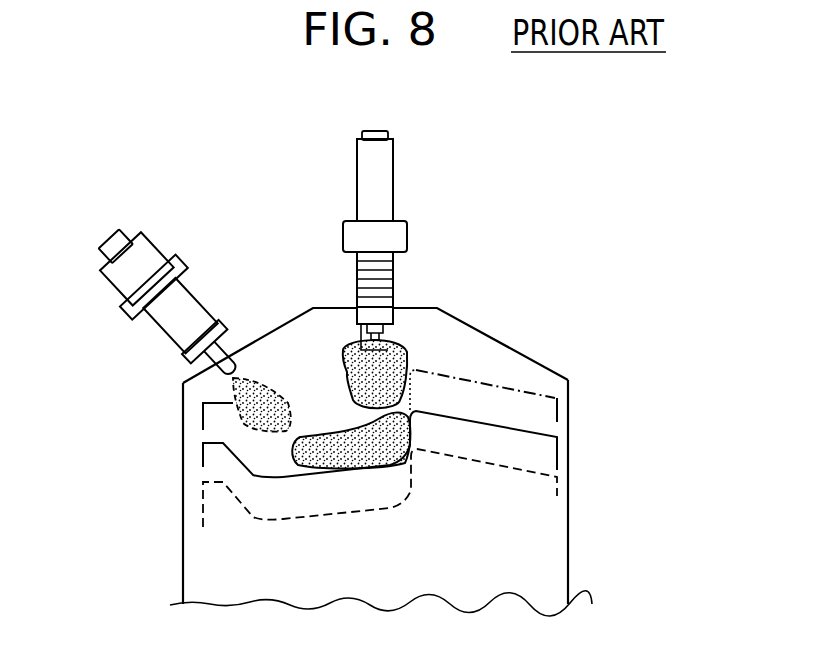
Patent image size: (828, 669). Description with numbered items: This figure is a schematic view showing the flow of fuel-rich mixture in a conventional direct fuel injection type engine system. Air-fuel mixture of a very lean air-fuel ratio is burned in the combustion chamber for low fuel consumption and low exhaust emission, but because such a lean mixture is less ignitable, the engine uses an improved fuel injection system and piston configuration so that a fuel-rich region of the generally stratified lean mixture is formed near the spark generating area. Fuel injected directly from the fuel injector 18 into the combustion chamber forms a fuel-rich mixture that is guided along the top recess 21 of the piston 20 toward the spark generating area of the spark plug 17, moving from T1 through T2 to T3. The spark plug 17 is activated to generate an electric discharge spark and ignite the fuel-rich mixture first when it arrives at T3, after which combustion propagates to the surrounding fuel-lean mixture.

The spark plug 17 is at (393, 290).
The fuel injector 18 is at (160, 333).
The piston 20 is at (495, 423).
The top recess 21 is at (283, 477).
The fuel-rich mixture position T1 is at (233, 397).
The fuel-rich mixture position T2 is at (335, 432).
The fuel-rich mixture position T3 is at (403, 358).